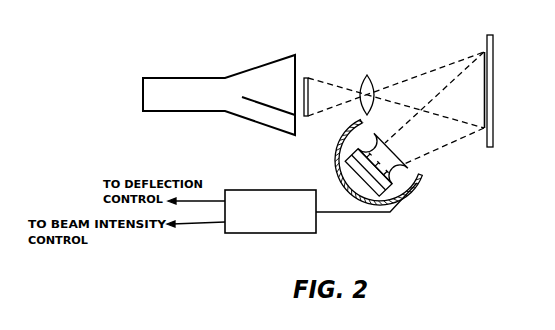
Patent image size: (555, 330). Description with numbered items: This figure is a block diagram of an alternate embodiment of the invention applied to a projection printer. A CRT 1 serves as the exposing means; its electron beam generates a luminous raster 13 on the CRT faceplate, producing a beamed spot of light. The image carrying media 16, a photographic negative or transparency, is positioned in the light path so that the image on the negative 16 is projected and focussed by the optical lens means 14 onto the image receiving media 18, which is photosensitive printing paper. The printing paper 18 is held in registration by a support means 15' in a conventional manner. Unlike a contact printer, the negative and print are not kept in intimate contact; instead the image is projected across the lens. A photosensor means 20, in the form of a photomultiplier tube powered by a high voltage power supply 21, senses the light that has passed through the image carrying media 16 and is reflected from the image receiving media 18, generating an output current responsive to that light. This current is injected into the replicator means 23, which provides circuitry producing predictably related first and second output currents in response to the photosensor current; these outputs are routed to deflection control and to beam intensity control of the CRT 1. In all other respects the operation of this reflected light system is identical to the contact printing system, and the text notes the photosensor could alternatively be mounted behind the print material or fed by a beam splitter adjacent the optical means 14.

The CRT 1 is at (262, 68).
The raster 13 is at (297, 63).
The optical lens means 14 is at (371, 83).
The support means 15' is at (508, 84).
The image carrying media 16 is at (308, 79).
The image receiving media 18 is at (484, 52).
The photosensor means 20 is at (401, 160).
The high voltage power supply 21 is at (339, 170).
The replicator means 23 is at (317, 229).